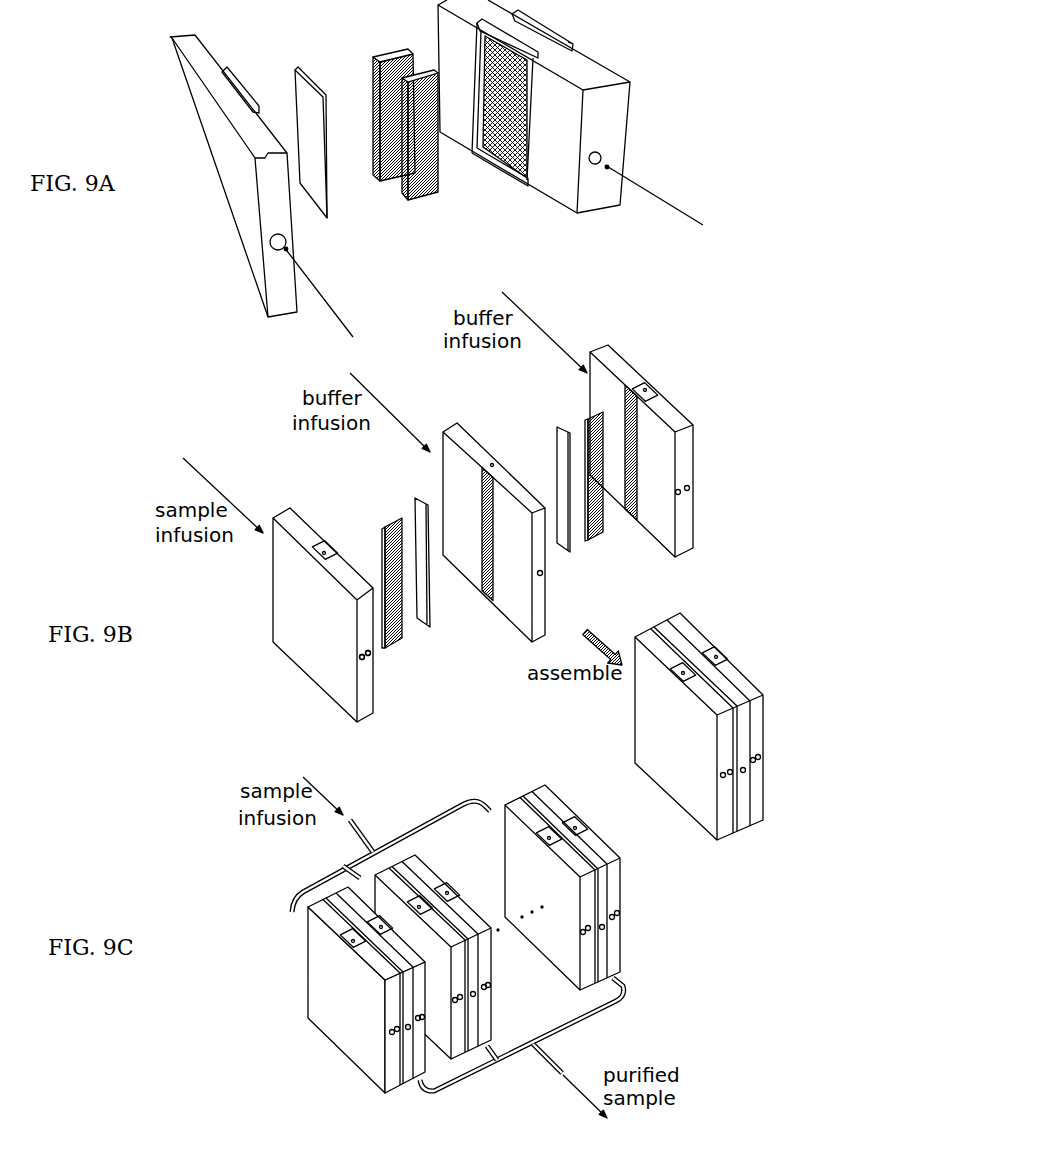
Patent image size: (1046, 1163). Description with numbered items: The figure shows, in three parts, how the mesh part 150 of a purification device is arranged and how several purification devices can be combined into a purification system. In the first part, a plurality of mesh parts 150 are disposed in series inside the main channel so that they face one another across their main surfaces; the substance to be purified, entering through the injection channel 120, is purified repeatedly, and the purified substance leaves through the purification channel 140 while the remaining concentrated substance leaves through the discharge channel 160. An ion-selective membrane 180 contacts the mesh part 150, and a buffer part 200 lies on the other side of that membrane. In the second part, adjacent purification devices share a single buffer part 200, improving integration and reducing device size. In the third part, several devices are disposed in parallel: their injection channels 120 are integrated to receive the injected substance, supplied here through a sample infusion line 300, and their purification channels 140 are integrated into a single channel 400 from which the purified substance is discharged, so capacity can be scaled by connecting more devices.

In FIG. 9A, the injection channel 120 is at (601, 156).
In FIG. 9B, the injection channel 120 is at (288, 518).
In FIG. 9C, the injection channel 120 is at (288, 904).
In FIG. 9B, the purification channel 140 is at (362, 660).
In FIG. 9C, the purification channel 140 is at (423, 1088).
In FIG. 9A, the mesh part 150 is at (403, 48).
In FIG. 9B, the mesh part 150 is at (388, 520).
In FIG. 9B, the discharge channel 160 is at (372, 658).
In FIG. 9A, the ion-selective membrane 180 is at (310, 82).
In FIG. 9B, the ion-selective membrane 180 is at (420, 497).
In FIG. 9A, the buffer part 200 is at (286, 240).
In FIG. 9B, the buffer part 200 is at (460, 433).
In FIG. 9C, the sample infusion tube 300 is at (362, 832).
In FIG. 9C, the single channel 400 is at (556, 1063).